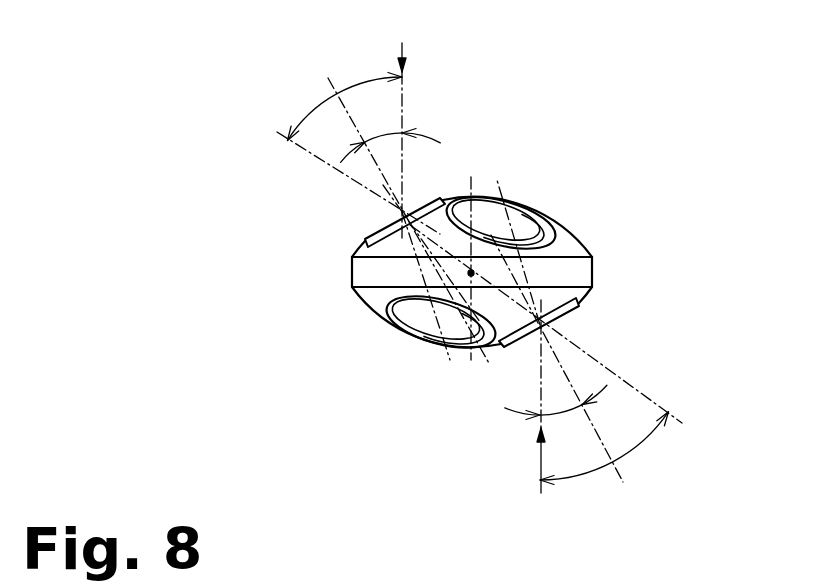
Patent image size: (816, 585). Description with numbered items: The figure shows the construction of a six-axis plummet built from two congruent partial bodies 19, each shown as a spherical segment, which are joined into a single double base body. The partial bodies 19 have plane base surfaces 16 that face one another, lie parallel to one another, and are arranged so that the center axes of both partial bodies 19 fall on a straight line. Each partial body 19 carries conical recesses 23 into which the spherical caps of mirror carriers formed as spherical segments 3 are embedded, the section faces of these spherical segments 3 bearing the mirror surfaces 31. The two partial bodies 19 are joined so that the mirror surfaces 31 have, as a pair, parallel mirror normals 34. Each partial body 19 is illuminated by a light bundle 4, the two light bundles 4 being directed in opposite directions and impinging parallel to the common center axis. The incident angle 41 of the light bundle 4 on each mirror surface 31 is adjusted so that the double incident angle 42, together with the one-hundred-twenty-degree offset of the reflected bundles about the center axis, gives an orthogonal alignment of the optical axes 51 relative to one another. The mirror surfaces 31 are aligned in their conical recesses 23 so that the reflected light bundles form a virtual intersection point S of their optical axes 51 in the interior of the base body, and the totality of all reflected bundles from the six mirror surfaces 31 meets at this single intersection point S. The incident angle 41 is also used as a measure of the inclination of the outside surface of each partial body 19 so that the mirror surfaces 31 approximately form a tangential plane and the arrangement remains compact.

The spherical segment 3 is at (503, 347).
The light bundle 4 is at (403, 50).
The plane base surface 16 is at (383, 286).
The partial body 19 is at (568, 243).
The conical recess 23 is at (563, 223).
The mirror surface 31 is at (521, 214).
The mirror normal 34 is at (350, 128).
The incident angle 41 is at (400, 205).
The double incident angle 42 is at (305, 117).
The optical axis 51 is at (345, 176).
The virtual intersection point S is at (475, 273).